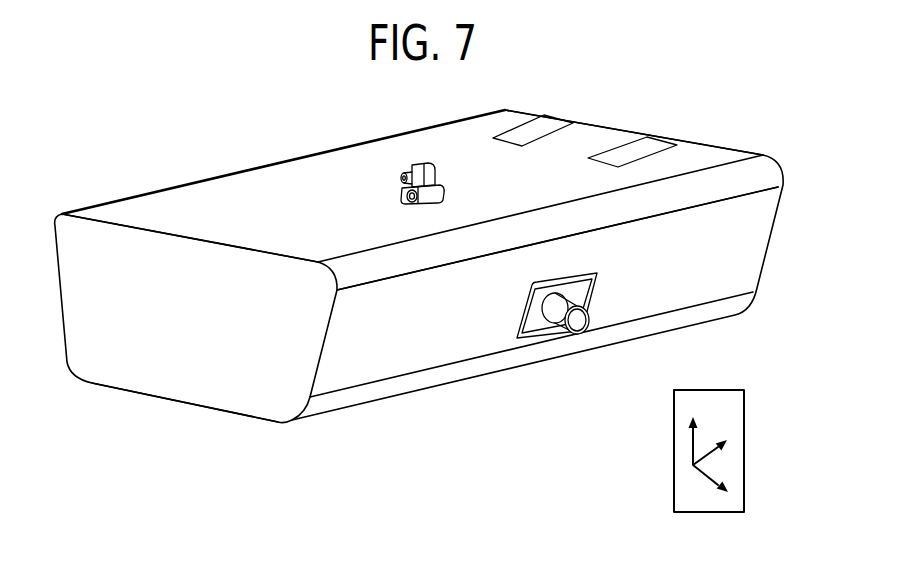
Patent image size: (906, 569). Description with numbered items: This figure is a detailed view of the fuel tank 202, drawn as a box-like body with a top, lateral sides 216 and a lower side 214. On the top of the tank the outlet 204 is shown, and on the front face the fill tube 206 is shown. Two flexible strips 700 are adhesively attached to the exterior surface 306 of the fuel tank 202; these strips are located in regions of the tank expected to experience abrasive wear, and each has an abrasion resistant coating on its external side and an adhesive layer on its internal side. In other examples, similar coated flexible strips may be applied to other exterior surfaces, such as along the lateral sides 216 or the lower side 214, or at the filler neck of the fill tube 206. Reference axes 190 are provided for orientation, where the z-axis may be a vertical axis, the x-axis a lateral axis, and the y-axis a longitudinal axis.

The reference axes 190 is at (674, 478).
The fuel tank 202 is at (640, 94).
The outlet 204 is at (426, 150).
The fill tube 206 is at (571, 290).
The lower side 214 is at (204, 428).
The lateral sides 216 is at (204, 153).
The exterior surface 306 is at (591, 148).
The flexible strips 700 is at (553, 122).